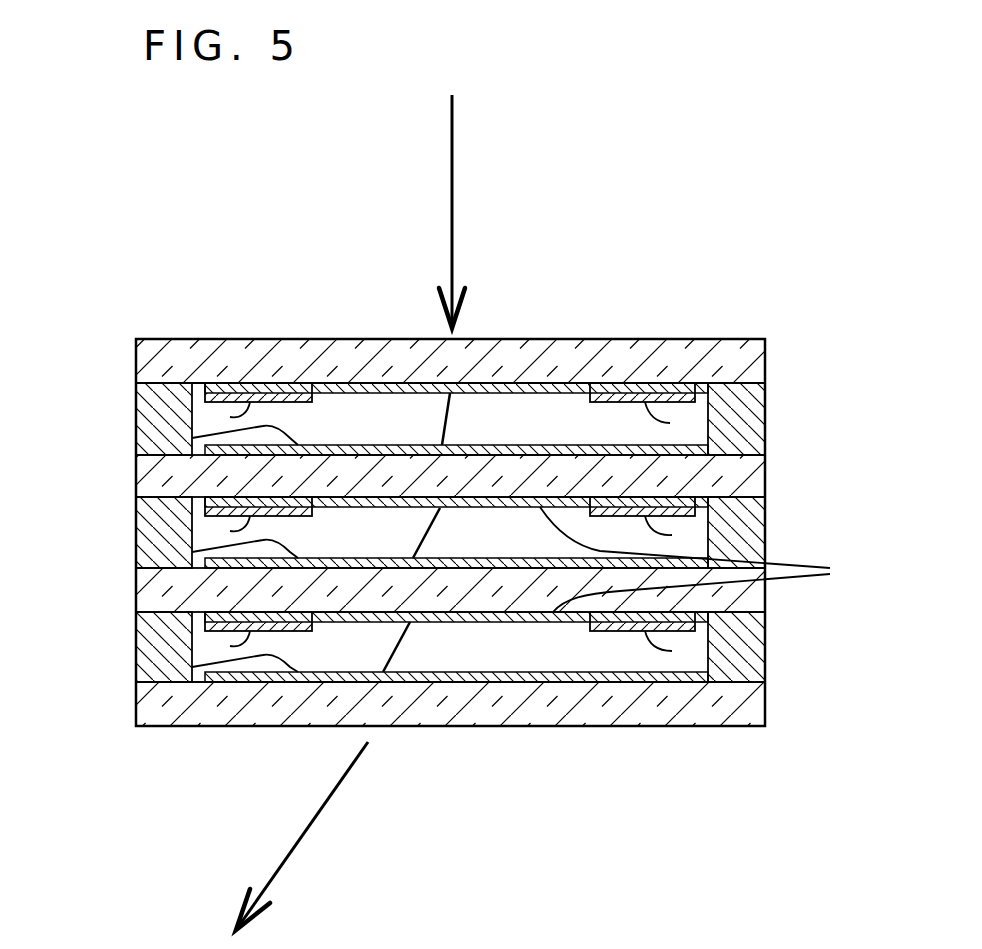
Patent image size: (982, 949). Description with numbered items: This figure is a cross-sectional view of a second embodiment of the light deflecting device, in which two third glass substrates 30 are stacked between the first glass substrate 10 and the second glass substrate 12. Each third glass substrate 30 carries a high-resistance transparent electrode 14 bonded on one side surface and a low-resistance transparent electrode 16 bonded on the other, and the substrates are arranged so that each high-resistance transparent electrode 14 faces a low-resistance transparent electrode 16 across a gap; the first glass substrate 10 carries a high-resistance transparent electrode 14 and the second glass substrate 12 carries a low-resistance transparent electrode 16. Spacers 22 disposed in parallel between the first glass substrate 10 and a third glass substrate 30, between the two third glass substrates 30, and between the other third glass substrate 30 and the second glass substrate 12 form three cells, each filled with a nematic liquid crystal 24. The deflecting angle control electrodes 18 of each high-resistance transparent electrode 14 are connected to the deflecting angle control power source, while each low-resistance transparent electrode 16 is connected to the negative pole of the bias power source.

The first glass substrate 10 is at (748, 367).
The second glass substrate 12 is at (750, 710).
The high-resistance transparent electrode 14 is at (517, 385).
The low-resistance transparent electrode 16 is at (192, 438).
The deflecting angle control electrode 18 is at (230, 417).
The spacer 22 is at (153, 427).
The nematic liquid crystal 24 is at (351, 432).
The third glass substrate 30 is at (748, 472).